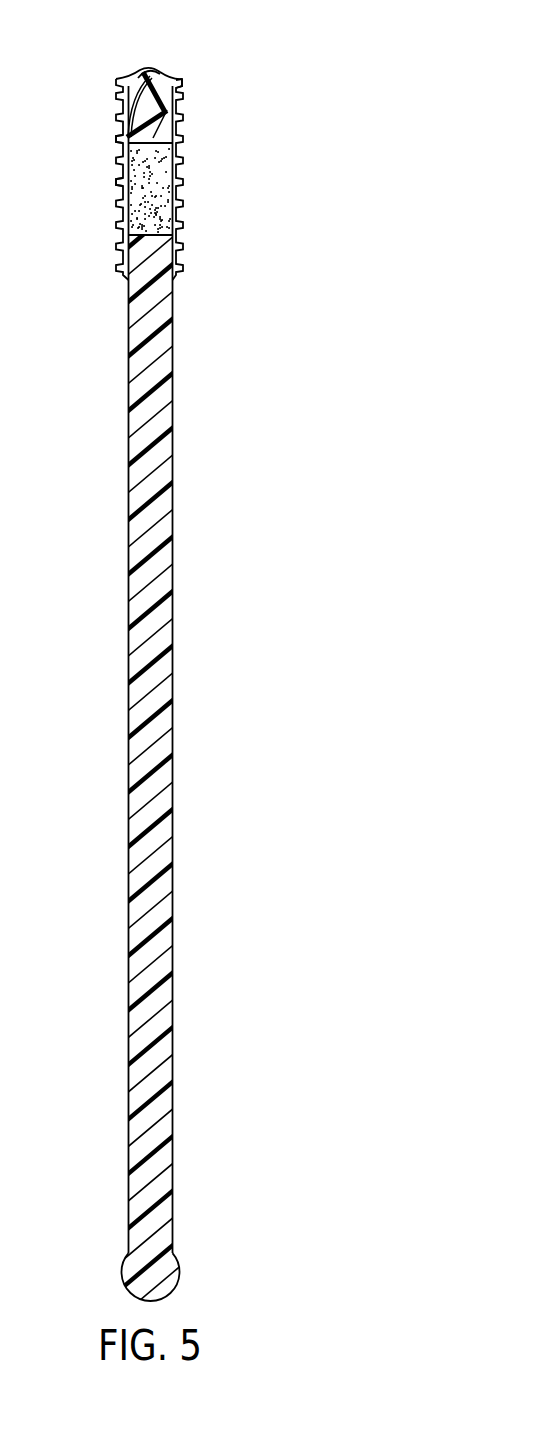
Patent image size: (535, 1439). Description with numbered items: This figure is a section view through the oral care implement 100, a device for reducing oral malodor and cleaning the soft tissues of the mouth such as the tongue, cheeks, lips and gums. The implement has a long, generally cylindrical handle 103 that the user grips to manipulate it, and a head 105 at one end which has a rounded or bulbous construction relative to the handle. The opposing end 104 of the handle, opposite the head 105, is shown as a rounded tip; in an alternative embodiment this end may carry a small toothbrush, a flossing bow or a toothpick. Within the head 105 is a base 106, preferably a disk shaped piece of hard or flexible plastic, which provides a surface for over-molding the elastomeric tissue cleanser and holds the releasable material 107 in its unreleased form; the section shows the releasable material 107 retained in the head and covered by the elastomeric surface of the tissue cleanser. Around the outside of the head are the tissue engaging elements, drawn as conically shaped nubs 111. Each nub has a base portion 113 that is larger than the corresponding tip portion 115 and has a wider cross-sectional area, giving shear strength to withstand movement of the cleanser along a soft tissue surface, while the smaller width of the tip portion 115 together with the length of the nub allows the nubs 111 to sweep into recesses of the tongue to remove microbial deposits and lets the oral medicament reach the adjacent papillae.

The oral care implement 100 is at (239, 673).
The handle 103 is at (173, 781).
The opposing end 104 is at (180, 1275).
The head 105 is at (157, 140).
The base 106 is at (178, 111).
The releasable material 107 is at (153, 220).
The nubs 111 is at (118, 125).
The base portion 113 is at (164, 77).
The tip portion 115 is at (178, 81).